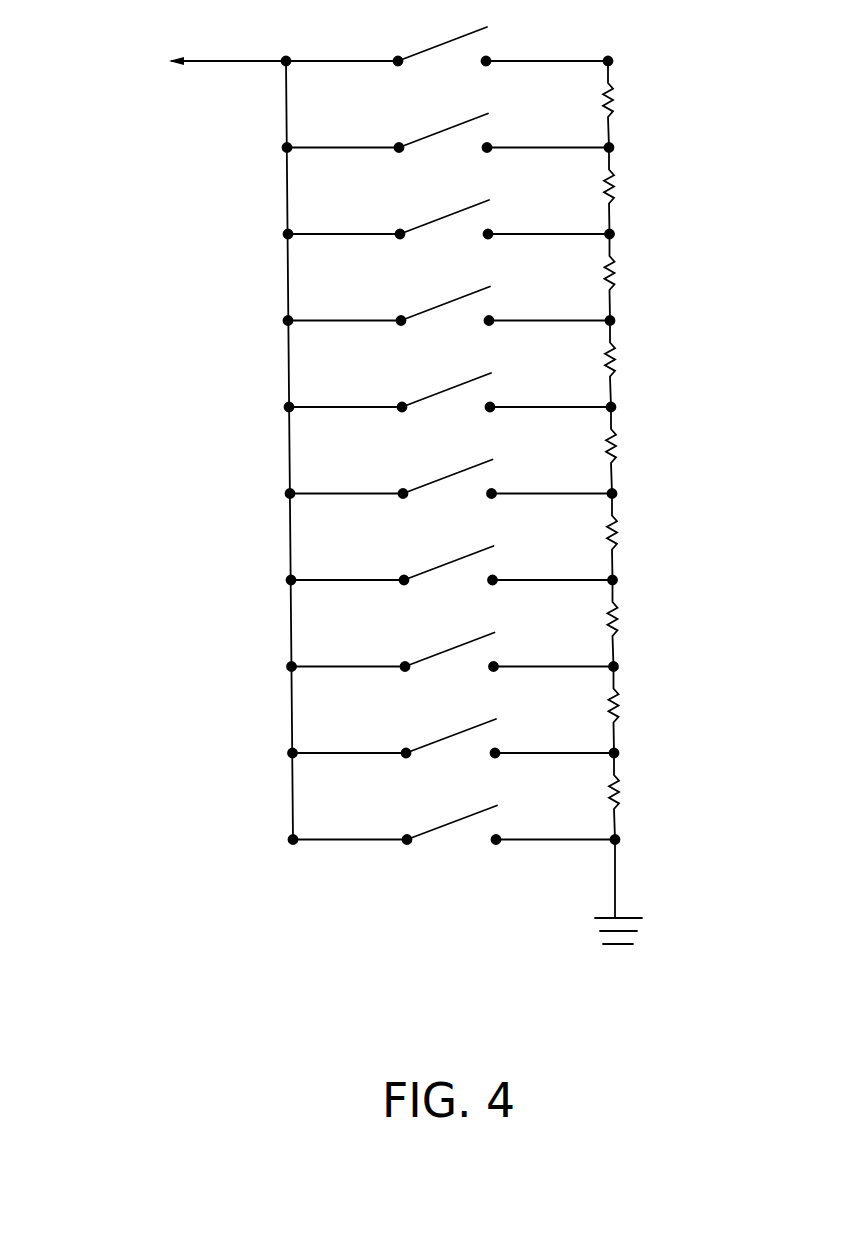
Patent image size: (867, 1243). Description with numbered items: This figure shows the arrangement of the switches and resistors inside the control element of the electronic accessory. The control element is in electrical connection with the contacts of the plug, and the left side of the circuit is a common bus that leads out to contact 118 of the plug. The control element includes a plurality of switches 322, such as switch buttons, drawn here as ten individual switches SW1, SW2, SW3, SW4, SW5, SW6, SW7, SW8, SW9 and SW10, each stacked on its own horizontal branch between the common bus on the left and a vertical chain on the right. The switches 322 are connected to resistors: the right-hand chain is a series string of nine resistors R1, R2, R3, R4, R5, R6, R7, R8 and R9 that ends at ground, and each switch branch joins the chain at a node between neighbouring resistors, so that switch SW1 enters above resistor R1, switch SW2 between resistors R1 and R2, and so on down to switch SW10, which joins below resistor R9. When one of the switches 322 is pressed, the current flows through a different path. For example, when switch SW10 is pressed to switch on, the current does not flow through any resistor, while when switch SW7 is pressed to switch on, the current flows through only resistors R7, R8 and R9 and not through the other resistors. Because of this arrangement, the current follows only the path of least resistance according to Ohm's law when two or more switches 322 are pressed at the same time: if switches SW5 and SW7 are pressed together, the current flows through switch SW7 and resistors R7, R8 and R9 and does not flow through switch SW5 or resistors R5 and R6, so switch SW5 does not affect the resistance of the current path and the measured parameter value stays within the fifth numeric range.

The switches 322 is at (349, 451).
The contact 118 is at (208, 95).
The switch SW1 is at (442, 62).
The switch SW2 is at (443, 149).
The switch SW3 is at (444, 235).
The switch SW4 is at (445, 322).
The switch SW5 is at (446, 408).
The switch SW6 is at (448, 495).
The switch SW7 is at (449, 581).
The switch SW8 is at (450, 668).
The switch SW9 is at (451, 754).
The switch SW10 is at (452, 841).
The resistor R1 is at (628, 104).
The resistor R2 is at (630, 191).
The resistor R3 is at (631, 277).
The resistor R4 is at (631, 364).
The resistor R5 is at (632, 450).
The resistor R6 is at (633, 537).
The resistor R7 is at (634, 623).
The resistor R8 is at (635, 710).
The resistor R9 is at (635, 796).